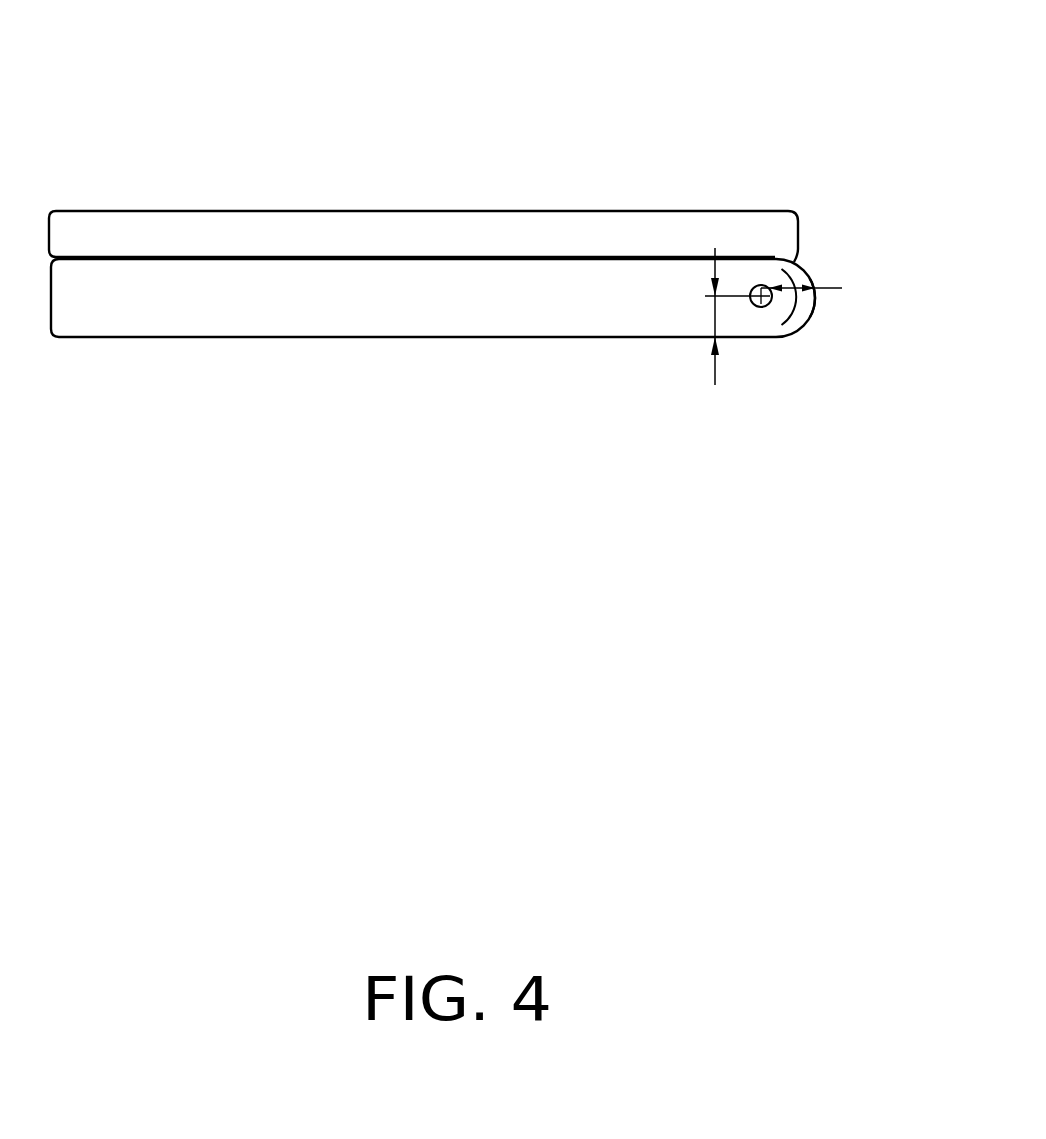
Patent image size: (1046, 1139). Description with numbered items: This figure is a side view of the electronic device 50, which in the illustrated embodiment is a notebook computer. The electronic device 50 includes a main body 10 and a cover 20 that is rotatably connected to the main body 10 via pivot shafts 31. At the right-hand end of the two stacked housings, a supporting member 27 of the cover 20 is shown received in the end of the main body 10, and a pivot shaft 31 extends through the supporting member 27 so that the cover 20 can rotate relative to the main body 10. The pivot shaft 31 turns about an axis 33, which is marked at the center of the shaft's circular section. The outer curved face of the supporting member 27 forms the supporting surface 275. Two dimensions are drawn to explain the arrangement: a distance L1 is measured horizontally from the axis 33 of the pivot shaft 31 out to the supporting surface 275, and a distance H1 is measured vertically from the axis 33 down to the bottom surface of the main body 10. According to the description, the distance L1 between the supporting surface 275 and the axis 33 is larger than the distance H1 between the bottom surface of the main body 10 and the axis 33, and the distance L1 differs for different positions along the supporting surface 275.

The electronic device 50 is at (452, 54).
The cover 20 is at (393, 232).
The main body 10 is at (441, 305).
The supporting member 27 is at (803, 279).
The supporting surface 275 is at (817, 300).
The pivot shaft 31 is at (762, 307).
The axis 33 is at (771, 304).
The distance H1 is at (714, 334).
The distance L1 is at (817, 294).